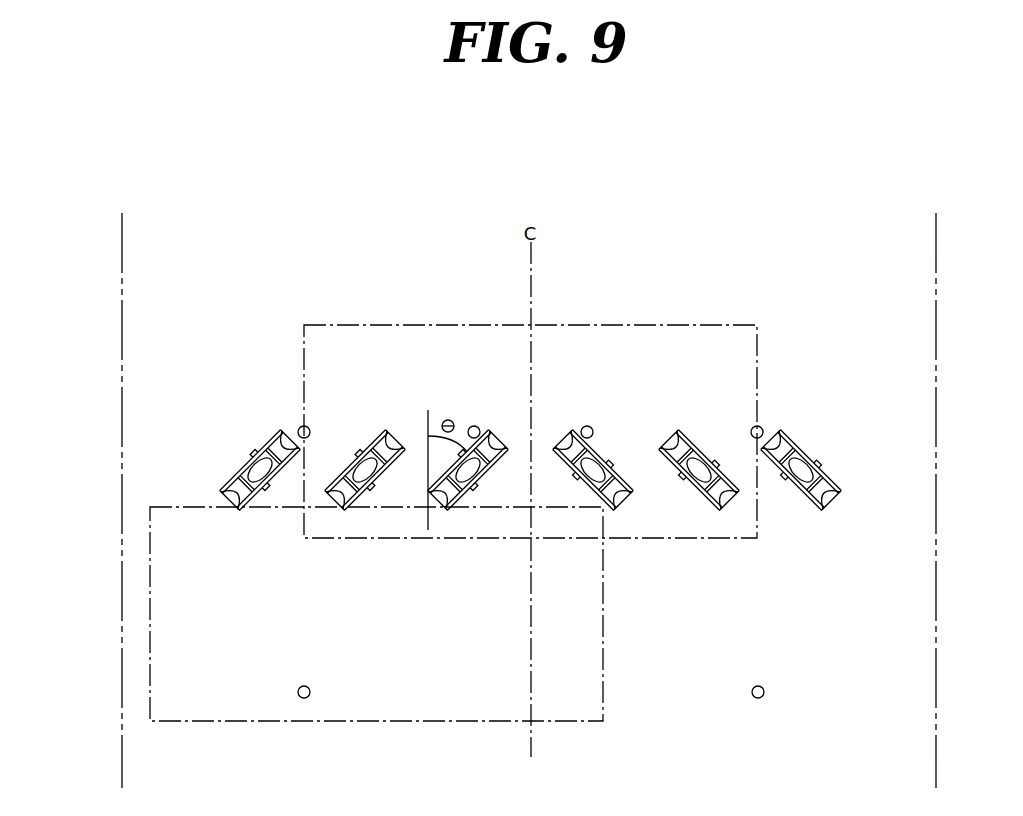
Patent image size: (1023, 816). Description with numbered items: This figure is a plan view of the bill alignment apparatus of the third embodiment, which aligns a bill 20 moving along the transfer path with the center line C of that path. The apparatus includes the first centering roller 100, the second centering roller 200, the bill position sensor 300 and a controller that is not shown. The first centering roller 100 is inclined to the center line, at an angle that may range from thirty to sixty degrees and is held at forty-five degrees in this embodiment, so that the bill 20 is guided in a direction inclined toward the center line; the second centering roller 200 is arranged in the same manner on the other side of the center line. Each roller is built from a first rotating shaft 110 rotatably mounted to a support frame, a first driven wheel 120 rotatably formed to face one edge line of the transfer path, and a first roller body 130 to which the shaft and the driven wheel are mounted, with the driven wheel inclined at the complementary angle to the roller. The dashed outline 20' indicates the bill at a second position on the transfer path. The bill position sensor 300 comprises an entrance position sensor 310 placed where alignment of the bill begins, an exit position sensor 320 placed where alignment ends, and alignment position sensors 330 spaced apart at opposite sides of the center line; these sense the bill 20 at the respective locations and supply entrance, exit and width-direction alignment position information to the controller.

The bill 20 is at (376, 646).
The moved substrate position 20' is at (530, 412).
The first centering roller 100 is at (180, 440).
The module body 110 is at (260, 470).
The first driven wheel 120 is at (250, 438).
The first roller body 130 is at (260, 470).
The second centering roller 200 is at (790, 410).
The bill position sensor 300 is at (485, 268).
The entrance position sensor 310 is at (303, 686).
The exit position sensor 320 is at (474, 426).
The alignment position sensor 330 is at (306, 426).